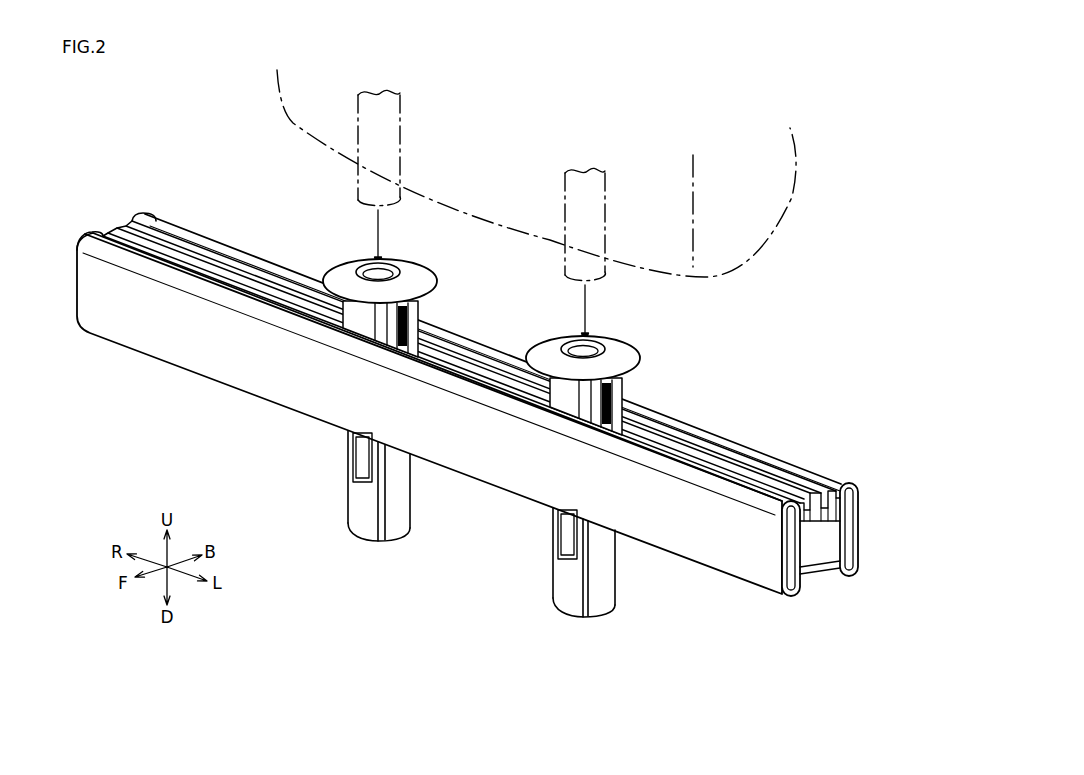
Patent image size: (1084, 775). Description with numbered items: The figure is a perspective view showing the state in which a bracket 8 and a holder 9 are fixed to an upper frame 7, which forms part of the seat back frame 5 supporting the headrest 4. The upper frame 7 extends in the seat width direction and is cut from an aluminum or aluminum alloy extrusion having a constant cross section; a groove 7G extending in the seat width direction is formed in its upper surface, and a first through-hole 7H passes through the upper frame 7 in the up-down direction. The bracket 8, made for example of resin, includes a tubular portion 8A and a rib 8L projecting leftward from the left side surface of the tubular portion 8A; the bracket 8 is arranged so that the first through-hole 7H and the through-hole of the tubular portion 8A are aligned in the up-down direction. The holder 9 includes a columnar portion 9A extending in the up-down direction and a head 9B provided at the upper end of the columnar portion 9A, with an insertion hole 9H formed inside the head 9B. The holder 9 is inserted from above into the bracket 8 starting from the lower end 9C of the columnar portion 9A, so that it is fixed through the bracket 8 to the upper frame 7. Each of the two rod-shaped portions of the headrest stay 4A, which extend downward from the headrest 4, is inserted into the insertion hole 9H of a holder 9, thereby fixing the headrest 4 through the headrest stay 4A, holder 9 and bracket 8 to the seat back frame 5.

The headrest 4 is at (752, 256).
The headrest stay 4A is at (401, 130).
The seat back frame 5 is at (266, 201).
The upper frame 7 is at (467, 405).
The groove 7G is at (772, 478).
The first through-hole 7H is at (410, 333).
The bracket 8 is at (496, 424).
The tubular portion 8A is at (482, 368).
The rib 8L is at (410, 327).
The holder 9 is at (498, 412).
The columnar portion 9A is at (365, 497).
The head 9B is at (410, 285).
The lower end 9C is at (358, 538).
The insertion hole 9H is at (393, 273).